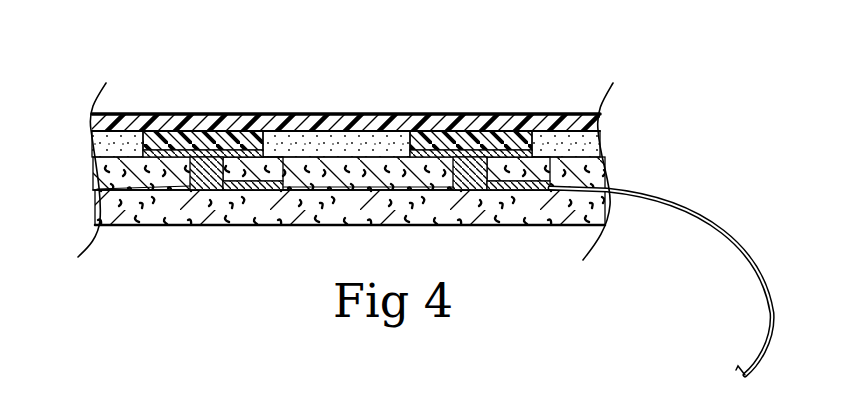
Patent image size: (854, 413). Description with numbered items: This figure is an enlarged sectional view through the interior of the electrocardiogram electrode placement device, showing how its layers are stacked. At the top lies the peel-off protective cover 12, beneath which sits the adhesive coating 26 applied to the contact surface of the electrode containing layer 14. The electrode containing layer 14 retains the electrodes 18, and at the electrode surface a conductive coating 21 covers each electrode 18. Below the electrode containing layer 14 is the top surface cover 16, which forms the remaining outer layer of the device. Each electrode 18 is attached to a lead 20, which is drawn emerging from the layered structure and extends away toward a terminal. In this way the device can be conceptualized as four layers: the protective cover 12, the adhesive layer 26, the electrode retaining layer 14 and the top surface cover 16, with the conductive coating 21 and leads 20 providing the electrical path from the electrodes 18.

The peel-off protective cover 12 is at (168, 122).
The electrode containing layer 14 is at (603, 175).
The top surface cover 16 is at (607, 213).
The electrode 18 is at (263, 111).
The lead 20 is at (767, 327).
The conductive coating 21 is at (211, 132).
The adhesive coating 26 is at (110, 150).